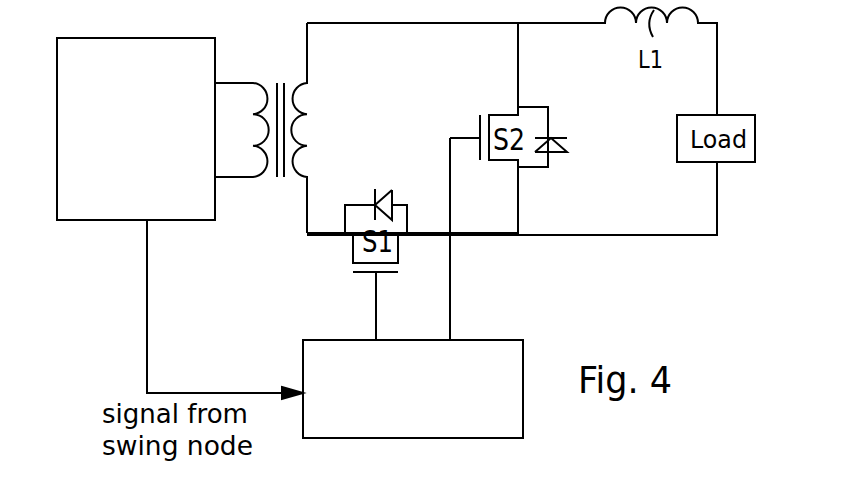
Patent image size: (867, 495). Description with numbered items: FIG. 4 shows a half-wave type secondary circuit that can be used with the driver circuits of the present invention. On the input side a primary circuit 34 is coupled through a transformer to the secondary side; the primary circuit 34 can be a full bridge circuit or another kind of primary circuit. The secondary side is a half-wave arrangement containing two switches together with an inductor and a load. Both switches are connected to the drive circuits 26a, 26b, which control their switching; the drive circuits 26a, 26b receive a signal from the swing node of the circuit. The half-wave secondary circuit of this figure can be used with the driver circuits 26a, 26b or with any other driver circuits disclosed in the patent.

The primary circuit 34 is at (163, 129).
The drive circuit 26a is at (413, 389).
The drive circuit 26b is at (413, 389).